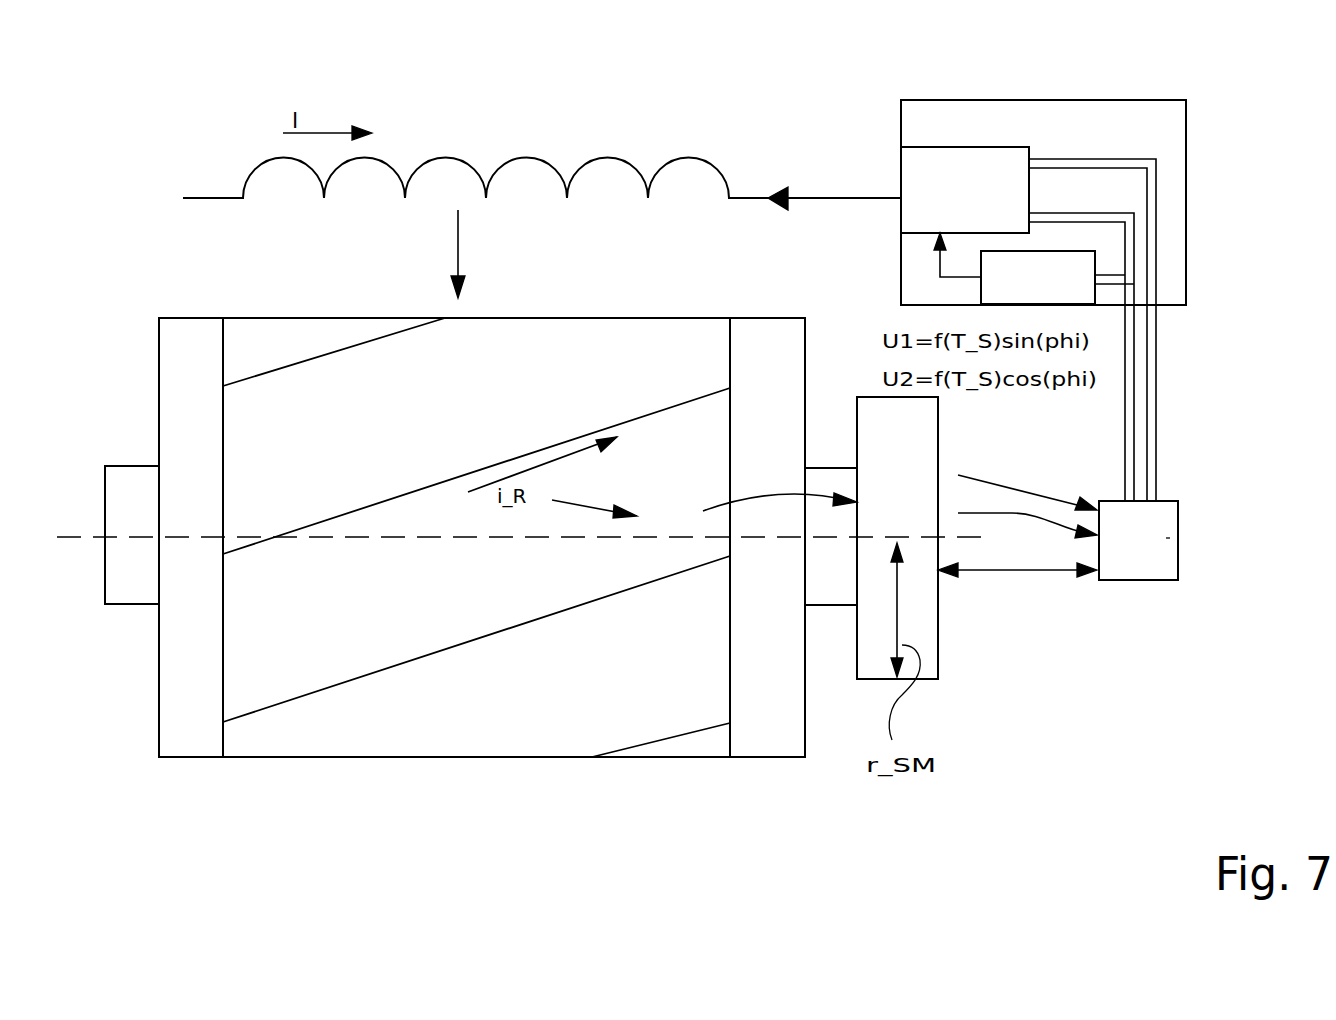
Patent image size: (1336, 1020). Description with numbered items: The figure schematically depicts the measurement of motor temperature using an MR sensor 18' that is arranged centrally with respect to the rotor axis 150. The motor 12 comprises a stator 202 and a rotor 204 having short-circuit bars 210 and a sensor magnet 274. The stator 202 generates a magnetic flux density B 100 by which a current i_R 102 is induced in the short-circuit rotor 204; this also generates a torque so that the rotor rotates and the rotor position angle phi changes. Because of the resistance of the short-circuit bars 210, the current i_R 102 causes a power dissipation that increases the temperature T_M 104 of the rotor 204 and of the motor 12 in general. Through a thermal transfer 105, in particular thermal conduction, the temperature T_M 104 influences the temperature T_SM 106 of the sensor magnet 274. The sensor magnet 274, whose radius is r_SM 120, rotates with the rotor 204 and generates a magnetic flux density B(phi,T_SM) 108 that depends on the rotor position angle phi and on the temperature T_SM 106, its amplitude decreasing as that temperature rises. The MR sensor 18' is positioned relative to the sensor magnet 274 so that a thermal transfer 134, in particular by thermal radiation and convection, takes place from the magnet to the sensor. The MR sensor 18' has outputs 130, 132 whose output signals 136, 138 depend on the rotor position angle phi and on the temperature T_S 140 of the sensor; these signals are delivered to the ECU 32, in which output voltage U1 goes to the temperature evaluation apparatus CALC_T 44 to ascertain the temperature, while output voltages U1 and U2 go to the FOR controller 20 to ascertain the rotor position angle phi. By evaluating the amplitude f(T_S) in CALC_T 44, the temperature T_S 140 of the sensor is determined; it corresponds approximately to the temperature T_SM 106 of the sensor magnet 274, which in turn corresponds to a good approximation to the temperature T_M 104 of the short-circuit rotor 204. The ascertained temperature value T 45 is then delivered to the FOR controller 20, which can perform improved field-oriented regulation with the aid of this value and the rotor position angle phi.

The motor 12 is at (198, 266).
The FOR controller 20 is at (935, 147).
The electronic control unit (ECU) 32 is at (1040, 100).
The temperature evaluation apparatus CALC_T 44 is at (988, 297).
The temperature value T 45 is at (915, 272).
The magnetic flux density B 100 is at (488, 250).
The current i_R 102 is at (537, 466).
The temperature T_M 104 is at (667, 500).
The thermal transfer 105 is at (782, 495).
The temperature T_SM 106 is at (896, 490).
The magnetic flux density B(phi,T_SM) 108 is at (960, 440).
The radius r_SM 120 is at (900, 630).
The output 130 is at (1125, 440).
The output 132 is at (1147, 476).
The thermal transfer 134 is at (1013, 514).
The output signal 136 is at (1092, 350).
The output signal 138 is at (1097, 388).
The temperature T_S 140 is at (1166, 538).
The rotor axis 150 is at (318, 540).
The MR sensor 18' is at (1176, 540).
The stator 202 is at (722, 172).
The rotor 204 is at (655, 318).
The short-circuit bars 210 is at (317, 360).
The sensor magnet 274 is at (925, 642).